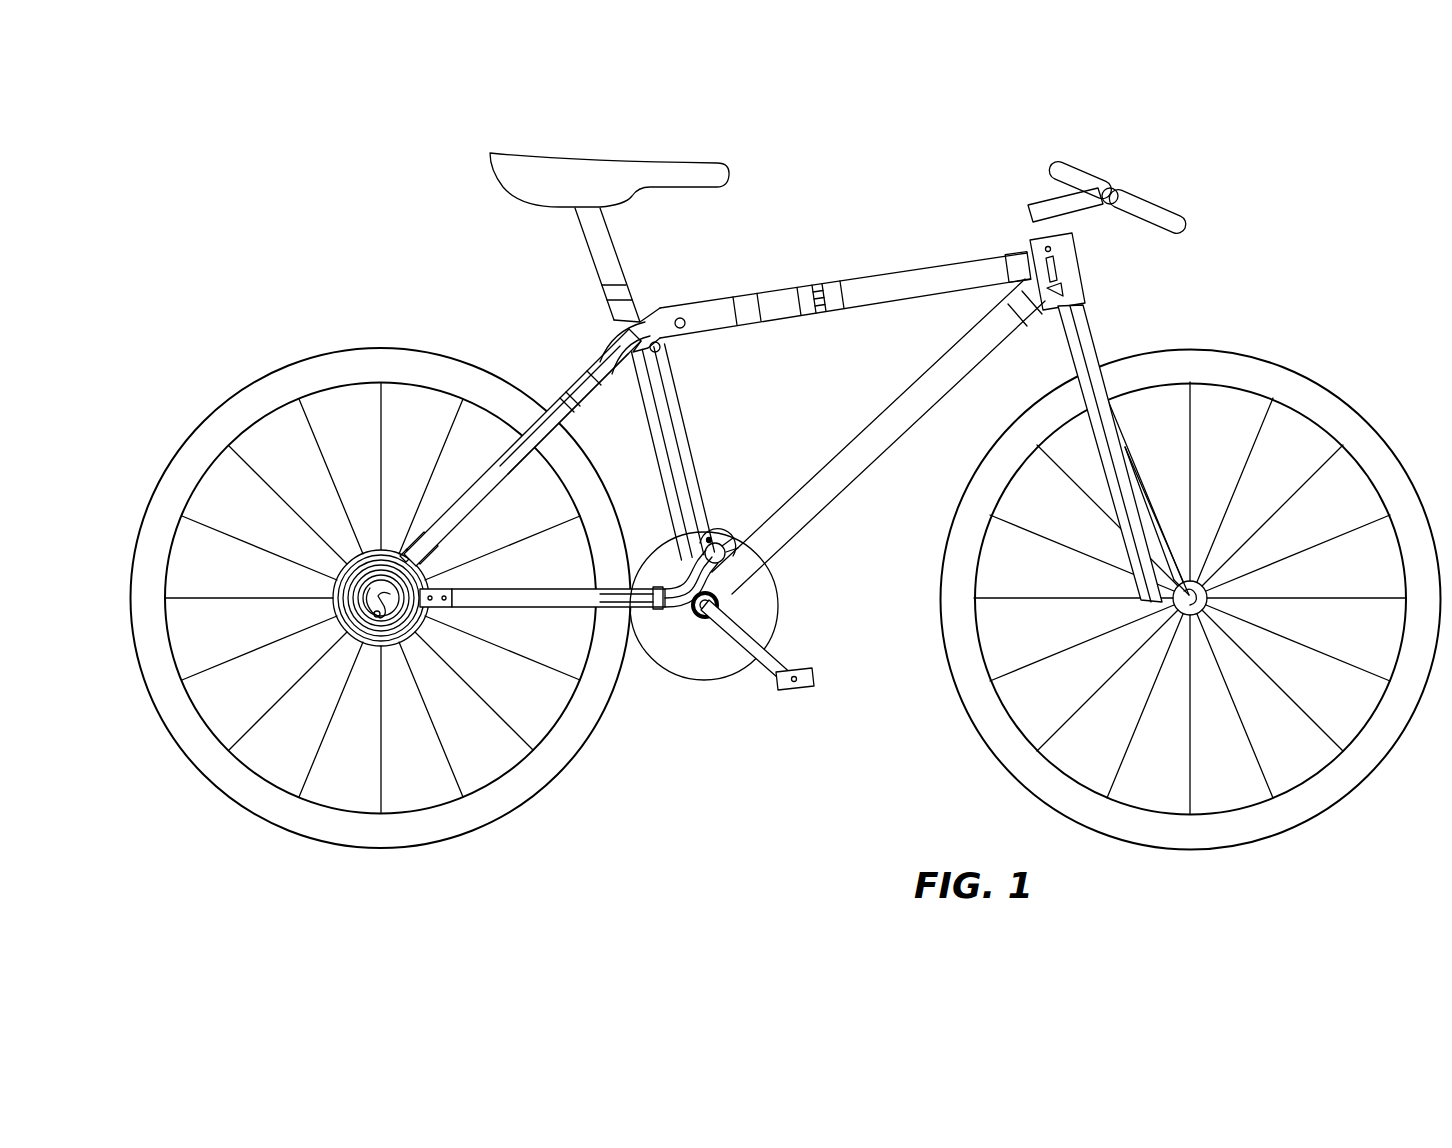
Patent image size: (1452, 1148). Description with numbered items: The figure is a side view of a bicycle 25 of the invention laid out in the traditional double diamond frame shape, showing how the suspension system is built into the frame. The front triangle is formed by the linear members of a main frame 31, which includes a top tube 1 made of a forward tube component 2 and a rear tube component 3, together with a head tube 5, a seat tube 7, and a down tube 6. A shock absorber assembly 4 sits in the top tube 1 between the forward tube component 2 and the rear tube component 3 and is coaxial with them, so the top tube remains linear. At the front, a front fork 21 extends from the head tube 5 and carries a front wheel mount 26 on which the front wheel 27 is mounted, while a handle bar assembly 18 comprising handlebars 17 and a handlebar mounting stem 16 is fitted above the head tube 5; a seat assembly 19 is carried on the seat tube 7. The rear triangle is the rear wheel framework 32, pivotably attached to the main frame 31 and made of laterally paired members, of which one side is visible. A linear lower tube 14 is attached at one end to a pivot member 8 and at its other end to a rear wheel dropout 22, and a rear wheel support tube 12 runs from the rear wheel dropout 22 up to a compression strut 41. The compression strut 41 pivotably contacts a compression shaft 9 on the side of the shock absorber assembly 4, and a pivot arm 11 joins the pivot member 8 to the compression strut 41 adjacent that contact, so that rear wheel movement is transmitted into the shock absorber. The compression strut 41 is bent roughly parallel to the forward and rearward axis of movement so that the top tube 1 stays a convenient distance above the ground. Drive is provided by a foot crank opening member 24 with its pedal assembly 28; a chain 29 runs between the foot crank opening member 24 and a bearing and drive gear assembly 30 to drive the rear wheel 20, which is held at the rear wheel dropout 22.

The top tube 1 is at (868, 305).
The forward tube component 2 is at (952, 262).
The rear tube component 3 is at (638, 306).
The shock absorber assembly 4 is at (772, 287).
The head tube 5 is at (1088, 258).
The down tube 6 is at (878, 456).
The seat tube 7 is at (667, 400).
The pivot member 8 is at (718, 540).
The compression shaft 9 is at (681, 316).
The pivot arm 11 is at (692, 441).
The rear wheel support tube 12 is at (494, 478).
The linear lower tube 14 is at (517, 623).
The handlebar mounting stem 16 is at (1030, 210).
The handlebars 17 is at (1188, 218).
The handlebar assembly 18 is at (1118, 172).
The seat assembly 19 is at (508, 152).
The rear wheel 20 is at (192, 422).
The front fork 21 is at (1096, 329).
The rear wheel dropout 22 is at (328, 654).
The foot crank opening member 24 is at (740, 600).
The bicycle 25 is at (775, 152).
The front wheel mount 26 is at (1280, 520).
The front wheel 27 is at (1352, 402).
The pedal assembly 28 is at (792, 692).
The chain 29 is at (640, 674).
The bearing and drive gear assembly 30 is at (395, 648).
The main frame 31 is at (982, 371).
The rear wheel framework 32 is at (576, 395).
The compression strut 41 is at (606, 340).